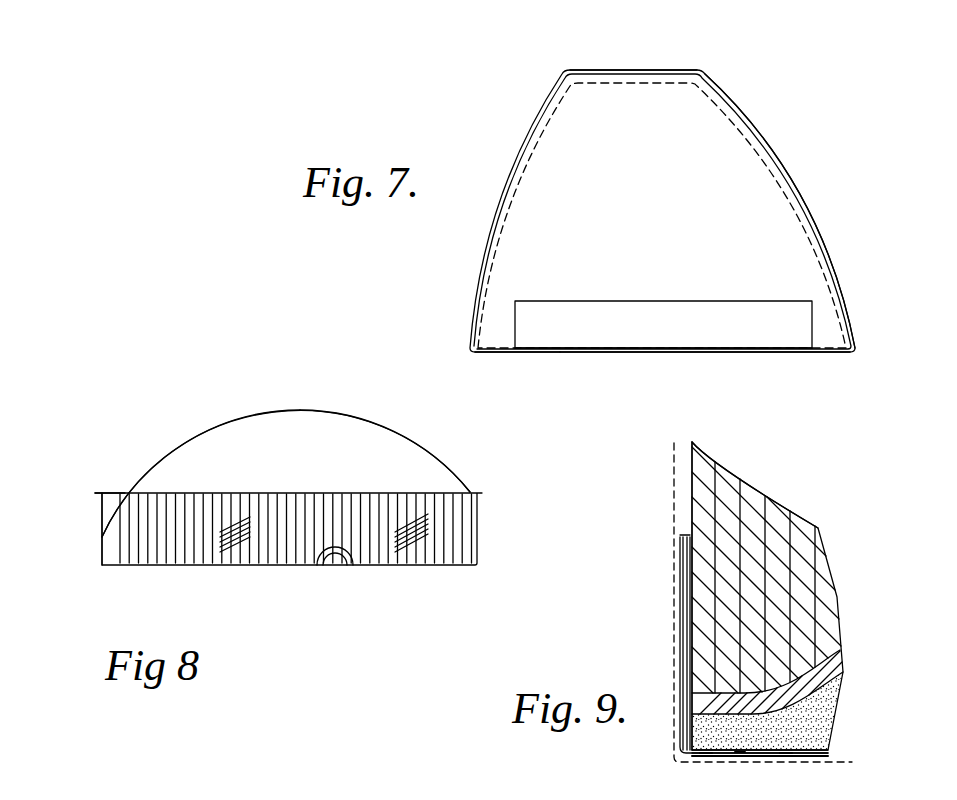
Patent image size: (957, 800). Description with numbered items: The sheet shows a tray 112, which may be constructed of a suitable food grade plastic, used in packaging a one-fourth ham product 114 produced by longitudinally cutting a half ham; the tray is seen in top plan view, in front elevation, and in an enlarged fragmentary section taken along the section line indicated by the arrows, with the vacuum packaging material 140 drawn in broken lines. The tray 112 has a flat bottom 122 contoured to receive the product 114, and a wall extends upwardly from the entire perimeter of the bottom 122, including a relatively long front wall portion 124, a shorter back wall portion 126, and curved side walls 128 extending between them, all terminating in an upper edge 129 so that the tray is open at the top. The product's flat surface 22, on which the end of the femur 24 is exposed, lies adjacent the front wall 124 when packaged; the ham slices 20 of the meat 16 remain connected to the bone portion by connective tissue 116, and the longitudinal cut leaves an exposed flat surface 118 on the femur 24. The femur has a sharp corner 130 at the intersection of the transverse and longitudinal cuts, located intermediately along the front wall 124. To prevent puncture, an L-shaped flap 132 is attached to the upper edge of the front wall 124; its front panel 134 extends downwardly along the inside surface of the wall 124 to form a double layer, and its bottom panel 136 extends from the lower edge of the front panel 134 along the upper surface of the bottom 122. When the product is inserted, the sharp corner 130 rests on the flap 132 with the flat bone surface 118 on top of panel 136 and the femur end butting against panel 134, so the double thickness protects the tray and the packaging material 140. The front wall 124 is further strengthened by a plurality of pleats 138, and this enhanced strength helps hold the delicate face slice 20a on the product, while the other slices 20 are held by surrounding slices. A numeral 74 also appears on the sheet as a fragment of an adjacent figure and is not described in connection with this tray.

In FIG. 7, the fragment from adjacent figure 74 is at (192, 0).
In FIG. 7, the tray 112 is at (794, 140).
In FIG. 8, the tray 112 is at (486, 473).
In FIG. 7, the one-fourth ham product 114 is at (773, 217).
In FIG. 8, the one-fourth ham product 114 is at (407, 452).
In FIG. 9, the connective tissue 116 is at (832, 664).
In FIG. 8, the exposed flat surface 118 is at (334, 564).
In FIG. 9, the exposed flat surface 118 is at (738, 752).
In FIG. 7, the flat bottom 122 is at (719, 117).
In FIG. 8, the flat bottom 122 is at (184, 566).
In FIG. 9, the flat bottom 122 is at (787, 759).
In FIG. 7, the front wall portion 124 is at (763, 353).
In FIG. 8, the front wall portion 124 is at (433, 548).
In FIG. 9, the front wall portion 124 is at (682, 604).
In FIG. 7, the back wall portion 126 is at (706, 71).
In FIG. 7, the curved side walls 128 is at (531, 136).
In FIG. 8, the curved side walls 128 is at (99, 513).
In FIG. 8, the upper edge 129 is at (116, 493).
In FIG. 9, the upper edge 129 is at (681, 534).
In FIG. 9, the sharp corner 130 is at (676, 751).
In FIG. 7, the L-shaped flap 132 is at (587, 302).
In FIG. 9, the L-shaped flap 132 is at (664, 658).
In FIG. 9, the front panel 134 is at (689, 576).
In FIG. 7, the bottom panel 136 is at (690, 312).
In FIG. 9, the bottom panel 136 is at (828, 752).
In FIG. 7, the pleats 138 is at (557, 353).
In FIG. 8, the pleats 138 is at (205, 530).
In FIG. 9, the vacuum packaging material 140 is at (674, 444).
In FIG. 9, the meat 16 is at (800, 548).
In FIG. 9, the ham slices 20 is at (755, 517).
In FIG. 9, the face slice 20a is at (708, 454).
In FIG. 7, the flat surface 22 is at (663, 353).
In FIG. 8, the flat surface 22 is at (358, 430).
In FIG. 9, the flat surface 22 is at (690, 484).
In FIG. 9, the femur 24 is at (824, 711).